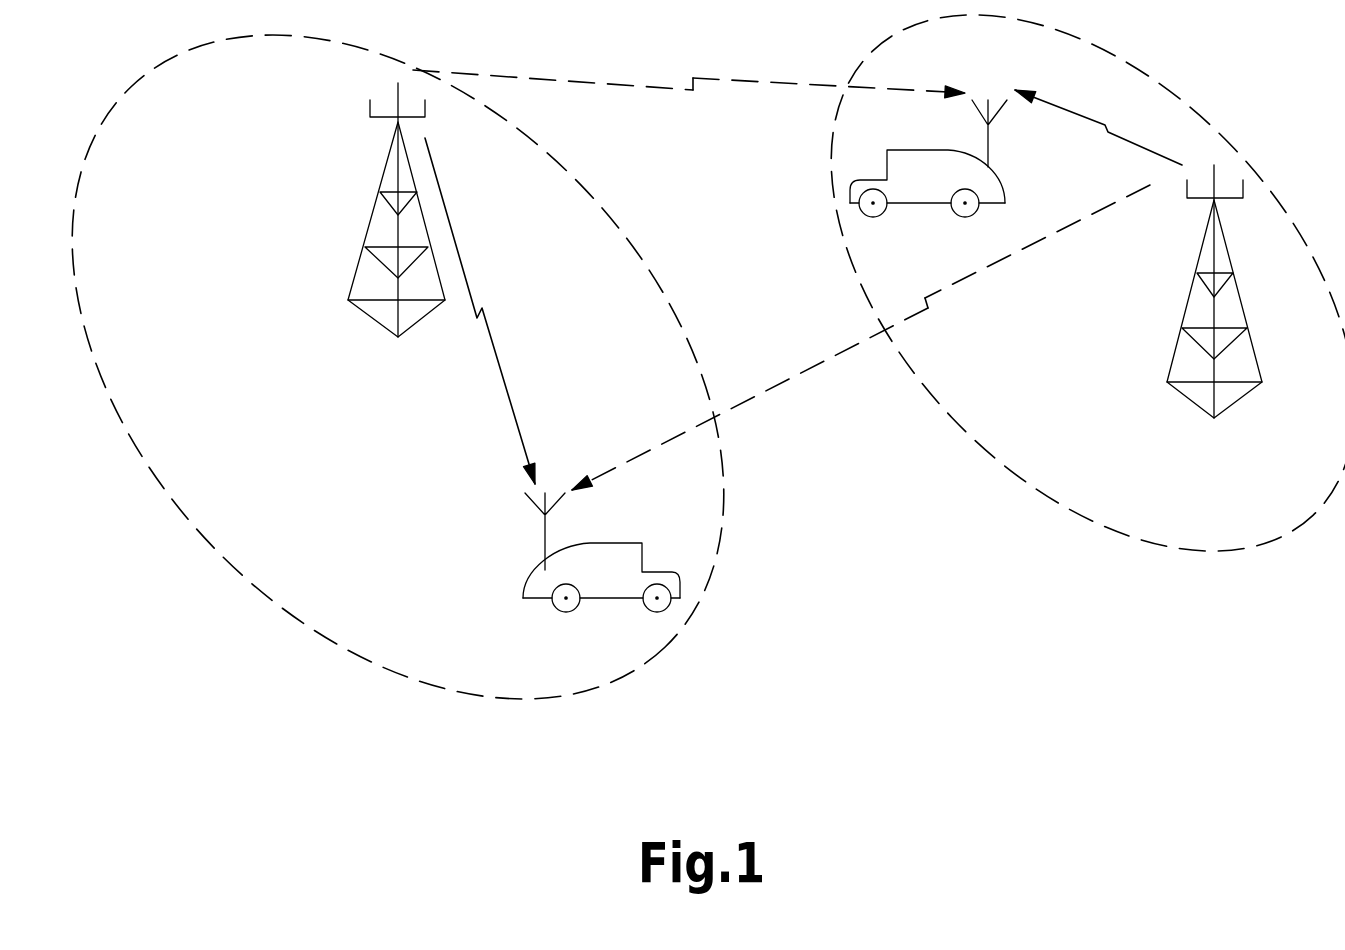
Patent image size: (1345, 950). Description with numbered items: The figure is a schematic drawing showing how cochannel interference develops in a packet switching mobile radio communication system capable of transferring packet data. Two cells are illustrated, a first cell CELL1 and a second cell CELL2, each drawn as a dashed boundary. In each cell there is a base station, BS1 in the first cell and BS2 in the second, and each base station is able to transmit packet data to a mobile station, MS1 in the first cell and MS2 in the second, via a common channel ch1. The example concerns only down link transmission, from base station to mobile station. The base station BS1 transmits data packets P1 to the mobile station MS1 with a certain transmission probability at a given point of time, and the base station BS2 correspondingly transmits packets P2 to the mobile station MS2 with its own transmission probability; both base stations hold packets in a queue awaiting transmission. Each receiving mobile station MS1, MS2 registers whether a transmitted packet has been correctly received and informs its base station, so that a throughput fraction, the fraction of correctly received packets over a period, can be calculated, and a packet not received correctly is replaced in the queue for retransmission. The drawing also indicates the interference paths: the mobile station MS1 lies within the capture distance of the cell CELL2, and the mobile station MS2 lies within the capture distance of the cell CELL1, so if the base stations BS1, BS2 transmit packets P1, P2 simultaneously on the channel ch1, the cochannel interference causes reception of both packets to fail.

The base station BS1 is at (398, 340).
The base station BS2 is at (1214, 420).
The mobile station MS1 is at (593, 600).
The mobile station MS2 is at (897, 207).
The cell CELL1 is at (617, 683).
The cell CELL2 is at (1053, 500).
The packet data P1 is at (689, 265).
The packet data P2 is at (877, 285).
The channel ch1 is at (828, 239).